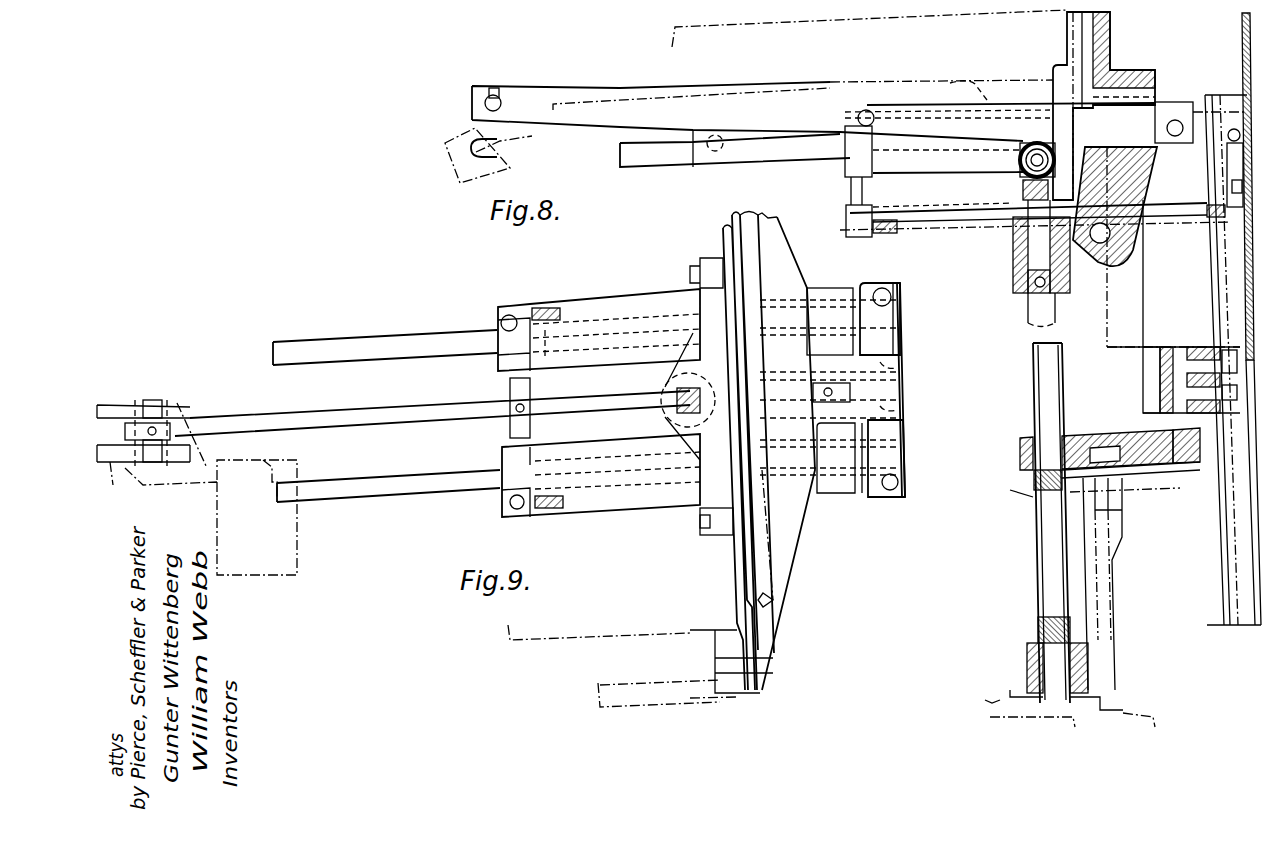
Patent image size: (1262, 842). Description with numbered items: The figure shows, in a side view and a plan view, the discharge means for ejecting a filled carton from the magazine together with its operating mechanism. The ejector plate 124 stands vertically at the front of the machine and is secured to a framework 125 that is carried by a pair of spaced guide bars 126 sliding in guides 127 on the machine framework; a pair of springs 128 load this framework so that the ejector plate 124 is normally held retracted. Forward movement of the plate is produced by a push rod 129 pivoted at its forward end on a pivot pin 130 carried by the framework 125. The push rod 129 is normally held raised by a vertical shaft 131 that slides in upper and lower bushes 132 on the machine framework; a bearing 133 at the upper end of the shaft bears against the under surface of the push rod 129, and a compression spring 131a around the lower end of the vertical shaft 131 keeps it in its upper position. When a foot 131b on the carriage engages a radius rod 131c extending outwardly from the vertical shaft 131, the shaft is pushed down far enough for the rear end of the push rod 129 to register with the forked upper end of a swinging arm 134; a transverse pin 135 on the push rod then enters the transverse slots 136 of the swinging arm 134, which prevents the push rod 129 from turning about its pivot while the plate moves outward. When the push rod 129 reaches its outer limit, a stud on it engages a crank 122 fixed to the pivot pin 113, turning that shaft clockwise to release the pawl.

In FIG. 8, the pivot pin 113 is at (1126, 246).
In FIG. 8, the crank 122 is at (1125, 201).
In FIG. 8, the ejector plate 124 is at (1246, 58).
In FIG. 9, the ejector plate 124 is at (903, 420).
In FIG. 9, the framework 125 is at (897, 448).
In FIG. 9, the guide bars 126 is at (393, 488).
In FIG. 9, the guides 127 is at (497, 483).
In FIG. 8, the springs 128 is at (934, 227).
In FIG. 9, the springs 128 is at (566, 506).
In FIG. 8, the push rod 129 is at (762, 110).
In FIG. 9, the push rod 129 is at (627, 401).
In FIG. 8, the pivot pin 130 is at (1176, 120).
In FIG. 9, the pivot pin 130 is at (897, 352).
In FIG. 8, the vertical shaft 131 is at (1040, 304).
In FIG. 9, the vertical shaft 131 is at (1040, 385).
In FIG. 9, the compression spring 131a is at (1040, 630).
In FIG. 9, the foot 131b is at (1165, 418).
In FIG. 9, the radius rod 131c is at (1085, 445).
In FIG. 8, the bushes 132 is at (1022, 252).
In FIG. 9, the bushes 132 is at (1088, 666).
In FIG. 8, the bearing 133 is at (1020, 173).
In FIG. 8, the swinging arm 134 is at (447, 150).
In FIG. 9, the swinging arm 134 is at (116, 462).
In FIG. 8, the transverse pin 135 is at (500, 98).
In FIG. 9, the transverse pin 135 is at (152, 399).
In FIG. 8, the transverse slots 136 is at (516, 139).